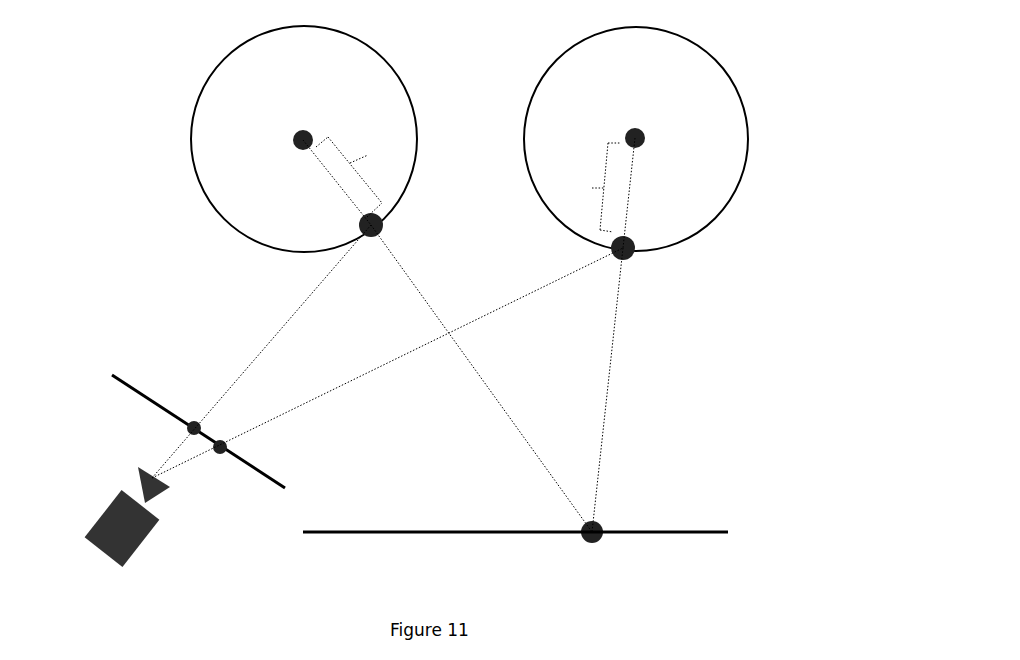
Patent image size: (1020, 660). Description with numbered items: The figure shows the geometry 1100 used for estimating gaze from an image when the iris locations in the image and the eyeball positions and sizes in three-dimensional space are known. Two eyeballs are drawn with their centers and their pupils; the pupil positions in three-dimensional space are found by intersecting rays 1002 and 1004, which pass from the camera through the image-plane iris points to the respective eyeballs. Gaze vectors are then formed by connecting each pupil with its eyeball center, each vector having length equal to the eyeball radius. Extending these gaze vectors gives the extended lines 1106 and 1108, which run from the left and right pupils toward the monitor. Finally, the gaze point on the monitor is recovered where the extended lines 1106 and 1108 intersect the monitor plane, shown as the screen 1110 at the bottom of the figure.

The geometry 1100 is at (140, 246).
The projection line from left pupil to image plane 1002 is at (245, 369).
The projection line from right pupil to image plane 1004 is at (308, 400).
The extended line 1106 is at (508, 418).
The extended line 1108 is at (613, 342).
The screen 1110 is at (582, 548).